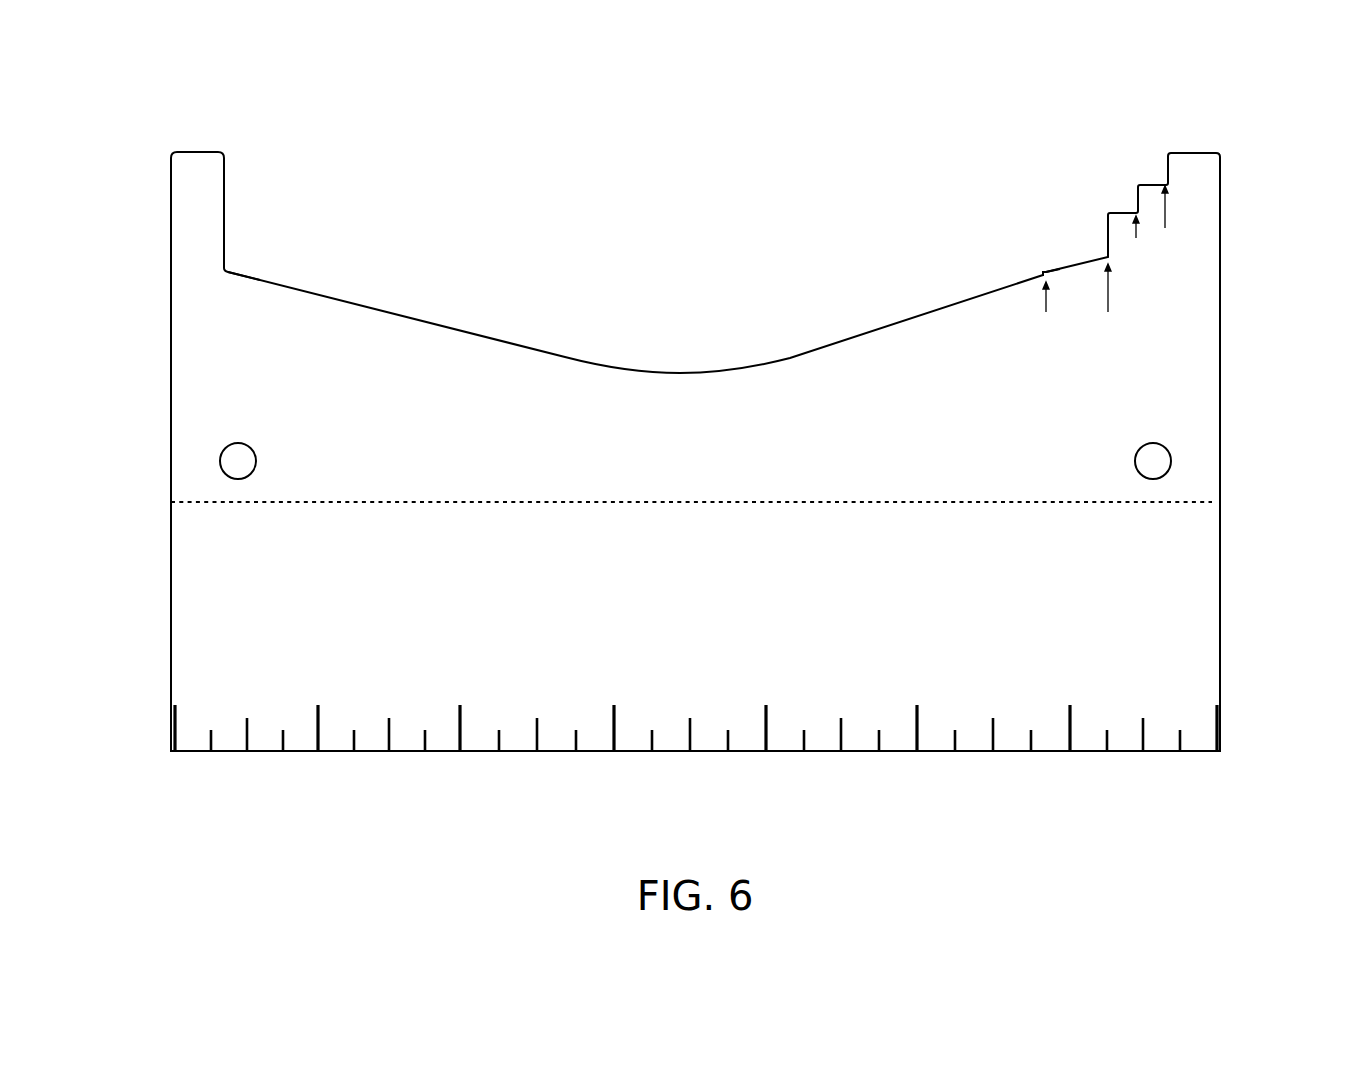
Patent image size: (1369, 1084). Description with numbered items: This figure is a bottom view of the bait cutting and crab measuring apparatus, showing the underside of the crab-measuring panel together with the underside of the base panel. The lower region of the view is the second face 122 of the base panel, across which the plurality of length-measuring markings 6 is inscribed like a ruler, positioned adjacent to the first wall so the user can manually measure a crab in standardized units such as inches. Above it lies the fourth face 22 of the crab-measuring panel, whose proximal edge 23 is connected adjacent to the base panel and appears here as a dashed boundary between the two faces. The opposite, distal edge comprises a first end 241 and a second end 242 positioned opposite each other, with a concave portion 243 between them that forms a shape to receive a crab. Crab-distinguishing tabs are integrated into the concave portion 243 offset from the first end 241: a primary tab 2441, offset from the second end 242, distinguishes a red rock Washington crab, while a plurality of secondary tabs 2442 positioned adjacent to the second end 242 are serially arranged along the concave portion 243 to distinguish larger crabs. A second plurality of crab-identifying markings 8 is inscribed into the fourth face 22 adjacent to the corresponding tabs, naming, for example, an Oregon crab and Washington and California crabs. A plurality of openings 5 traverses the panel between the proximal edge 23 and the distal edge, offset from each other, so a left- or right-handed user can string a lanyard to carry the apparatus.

The first end 241 is at (152, 194).
The second end 242 is at (1236, 183).
The concave portion 243 is at (720, 372).
The primary tab 2441 is at (1047, 270).
The plurality of secondary tabs 2442 is at (1108, 212).
The fourth face 22 is at (722, 449).
The second face 122 is at (692, 594).
The proximal edge 23 is at (1212, 502).
The plurality of openings 5 is at (235, 460).
The plurality of length-measuring markings 6 is at (470, 705).
The second plurality of crab-identifying markings 8 is at (1045, 346).